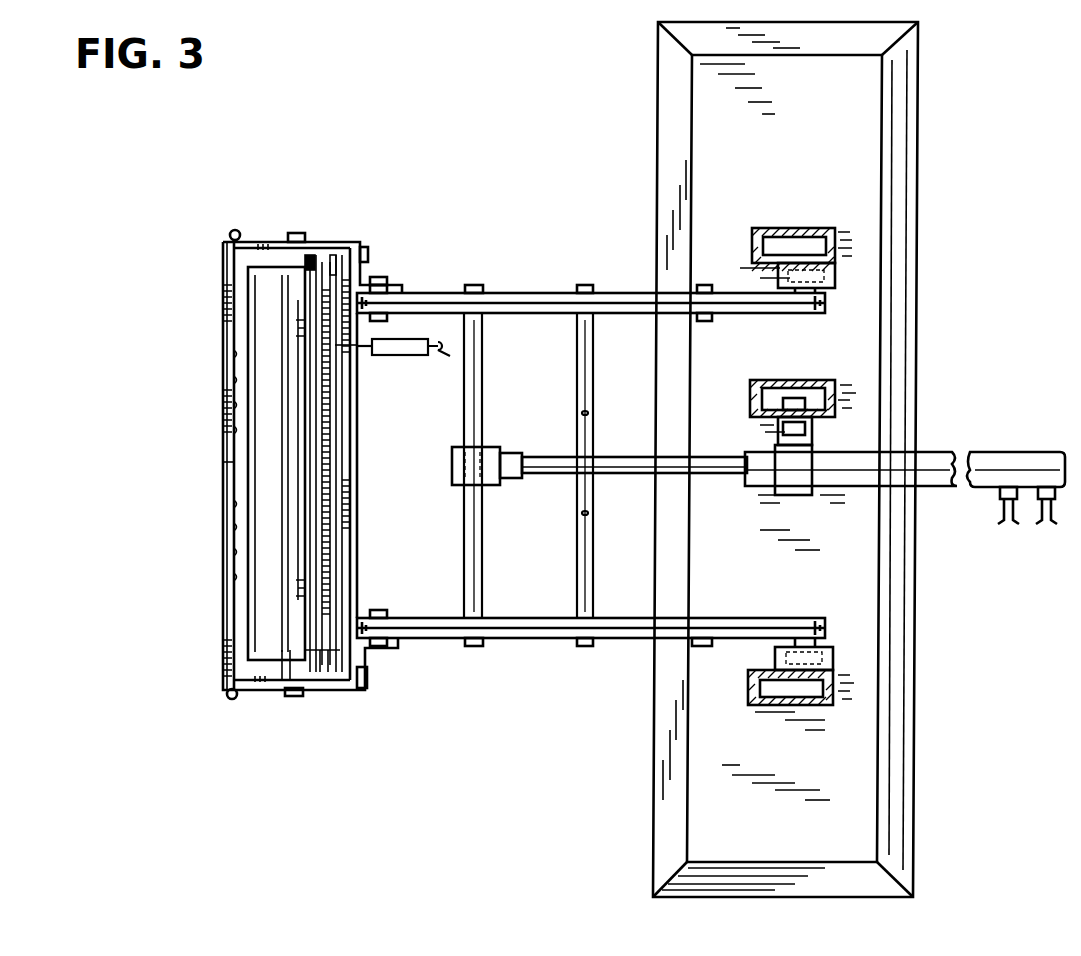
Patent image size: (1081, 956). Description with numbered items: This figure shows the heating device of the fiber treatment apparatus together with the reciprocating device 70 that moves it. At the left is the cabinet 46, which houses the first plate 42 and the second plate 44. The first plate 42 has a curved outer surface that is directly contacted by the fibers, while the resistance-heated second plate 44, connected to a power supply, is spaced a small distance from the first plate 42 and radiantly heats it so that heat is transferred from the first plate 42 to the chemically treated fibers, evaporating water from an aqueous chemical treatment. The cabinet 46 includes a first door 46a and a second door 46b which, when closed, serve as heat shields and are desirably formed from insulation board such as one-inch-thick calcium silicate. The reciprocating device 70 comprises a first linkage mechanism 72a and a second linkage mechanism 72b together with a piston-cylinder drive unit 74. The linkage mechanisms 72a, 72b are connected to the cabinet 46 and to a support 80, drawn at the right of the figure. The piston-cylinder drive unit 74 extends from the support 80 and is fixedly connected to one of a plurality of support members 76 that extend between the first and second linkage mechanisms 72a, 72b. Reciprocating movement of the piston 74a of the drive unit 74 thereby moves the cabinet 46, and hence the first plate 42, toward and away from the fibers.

The first plate 42 is at (272, 643).
The second plate 44 is at (325, 388).
The cabinet 46 is at (345, 527).
The first door 46a is at (224, 585).
The second door 46b is at (224, 360).
The reciprocating device 70 is at (711, 450).
The first linkage mechanism 72a is at (432, 636).
The second linkage mechanism 72b is at (435, 293).
The piston-cylinder drive unit 74 is at (930, 457).
The piston 74a is at (612, 458).
The support members 76 is at (472, 592).
The support 80 is at (905, 680).